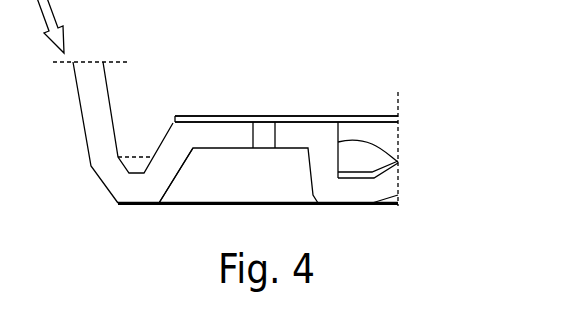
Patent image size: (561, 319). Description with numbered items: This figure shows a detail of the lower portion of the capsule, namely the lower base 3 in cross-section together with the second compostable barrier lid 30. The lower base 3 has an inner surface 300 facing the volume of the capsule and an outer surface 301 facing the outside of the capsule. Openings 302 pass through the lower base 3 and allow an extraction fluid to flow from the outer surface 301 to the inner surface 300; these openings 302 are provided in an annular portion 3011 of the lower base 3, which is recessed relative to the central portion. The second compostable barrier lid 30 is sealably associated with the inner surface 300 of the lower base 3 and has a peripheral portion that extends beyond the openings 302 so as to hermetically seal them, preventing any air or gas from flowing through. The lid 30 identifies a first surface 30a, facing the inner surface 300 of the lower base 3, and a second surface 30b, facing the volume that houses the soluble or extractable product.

The inner surface 300 is at (174, 118).
The outer surface 301 is at (220, 148).
The annular portion 3011 is at (209, 184).
The openings 302 is at (272, 160).
The second compostable barrier lid 30 is at (399, 120).
The first surface 30a is at (395, 132).
The second surface 30b is at (315, 116).
The lower base 3 is at (398, 162).